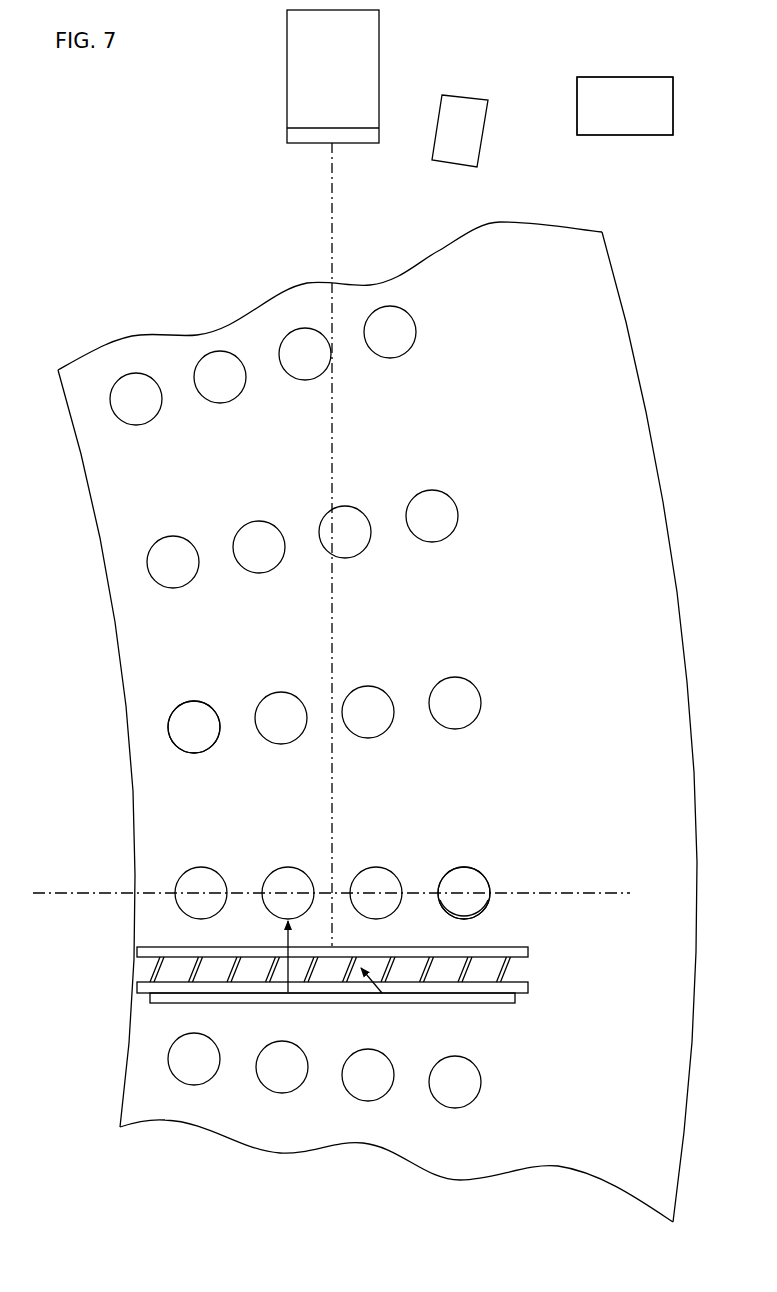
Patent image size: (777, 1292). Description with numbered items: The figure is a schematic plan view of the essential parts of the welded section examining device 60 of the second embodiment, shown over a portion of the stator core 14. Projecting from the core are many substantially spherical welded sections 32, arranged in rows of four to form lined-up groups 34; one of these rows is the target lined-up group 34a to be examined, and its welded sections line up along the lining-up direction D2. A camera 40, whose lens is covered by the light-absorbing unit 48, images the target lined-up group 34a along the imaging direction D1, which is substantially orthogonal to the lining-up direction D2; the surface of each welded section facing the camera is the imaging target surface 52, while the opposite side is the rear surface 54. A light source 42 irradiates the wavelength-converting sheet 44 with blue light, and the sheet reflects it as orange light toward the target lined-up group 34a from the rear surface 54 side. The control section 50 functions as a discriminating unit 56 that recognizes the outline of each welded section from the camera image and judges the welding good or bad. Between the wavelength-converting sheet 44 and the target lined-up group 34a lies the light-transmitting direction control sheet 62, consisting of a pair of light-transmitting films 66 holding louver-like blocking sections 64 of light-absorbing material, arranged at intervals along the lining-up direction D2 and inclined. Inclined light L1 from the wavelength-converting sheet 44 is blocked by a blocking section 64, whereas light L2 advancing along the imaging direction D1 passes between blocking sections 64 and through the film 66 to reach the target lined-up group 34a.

The welded section examining device 60 is at (130, 126).
The stator core 14 is at (605, 377).
The welded section 32 is at (437, 511).
The lined-up group 34 is at (157, 721).
The target lined-up group 34a is at (168, 878).
The camera 40 is at (300, 37).
The light-absorbing unit 48 is at (304, 136).
The light source 42 is at (473, 104).
The control section 50 is at (650, 77).
The discriminating unit 56 is at (625, 106).
The imaging target surface 52 is at (457, 868).
The rear surface 54 is at (467, 918).
The light-transmitting direction control sheet 62 is at (386, 971).
The film 66 is at (528, 955).
The blocking section 64 is at (589, 940).
The wavelength-converting sheet 44 is at (491, 1003).
The inclined light L1 is at (376, 996).
The light advancing along the imaging direction L2 is at (291, 968).
The imaging direction D1 is at (332, 231).
The lining-up direction D2 is at (590, 891).